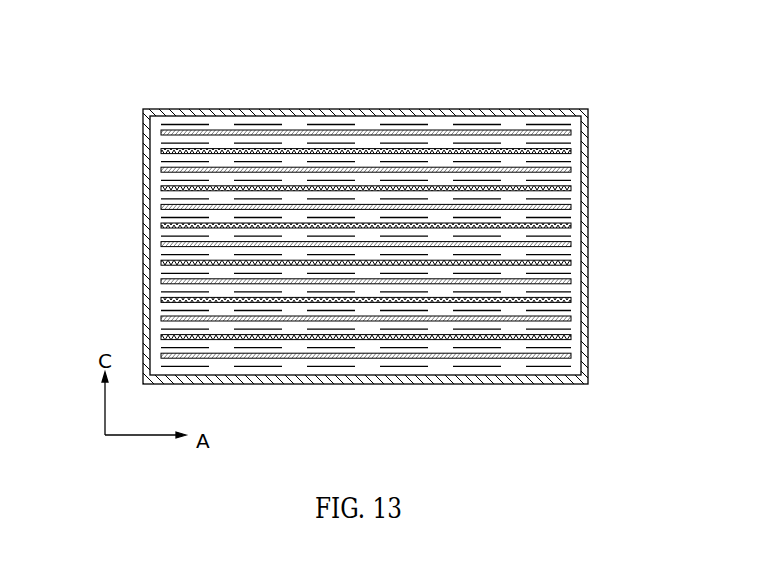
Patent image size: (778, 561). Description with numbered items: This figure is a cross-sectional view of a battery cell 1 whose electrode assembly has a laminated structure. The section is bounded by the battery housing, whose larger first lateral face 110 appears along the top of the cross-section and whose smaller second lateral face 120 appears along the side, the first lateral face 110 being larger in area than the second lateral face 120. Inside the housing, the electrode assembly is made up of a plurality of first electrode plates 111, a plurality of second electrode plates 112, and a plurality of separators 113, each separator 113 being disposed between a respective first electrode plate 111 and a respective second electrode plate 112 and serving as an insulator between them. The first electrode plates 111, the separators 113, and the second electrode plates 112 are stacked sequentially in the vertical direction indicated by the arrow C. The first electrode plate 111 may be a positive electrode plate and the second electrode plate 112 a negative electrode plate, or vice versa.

The battery cell 1 is at (232, 68).
The first lateral face 110 is at (366, 108).
The first electrode plate 111 is at (560, 186).
The second electrode plate 112 is at (567, 209).
The separator 113 is at (563, 204).
The second lateral face 120 is at (143, 212).